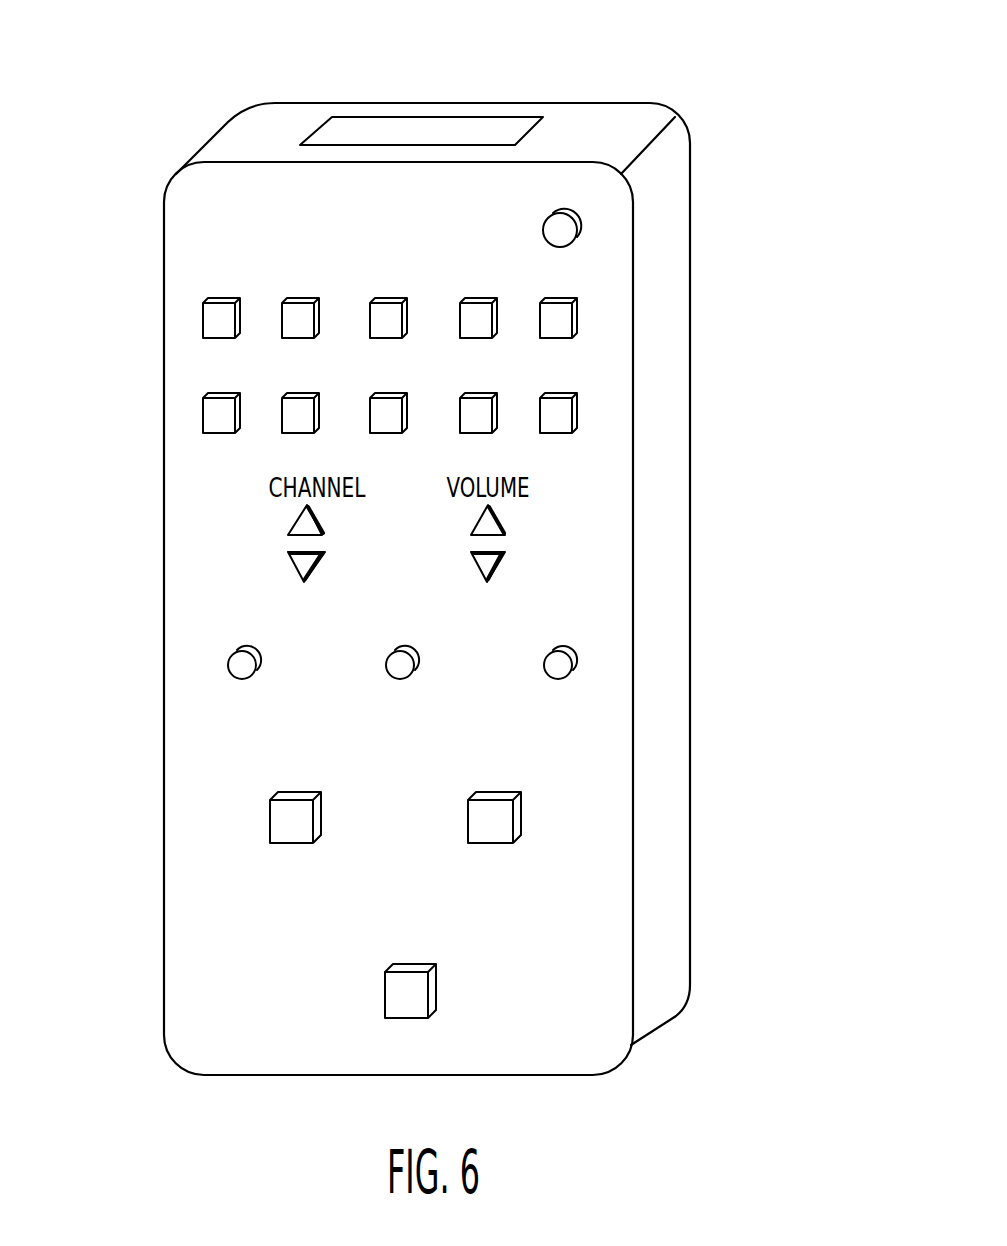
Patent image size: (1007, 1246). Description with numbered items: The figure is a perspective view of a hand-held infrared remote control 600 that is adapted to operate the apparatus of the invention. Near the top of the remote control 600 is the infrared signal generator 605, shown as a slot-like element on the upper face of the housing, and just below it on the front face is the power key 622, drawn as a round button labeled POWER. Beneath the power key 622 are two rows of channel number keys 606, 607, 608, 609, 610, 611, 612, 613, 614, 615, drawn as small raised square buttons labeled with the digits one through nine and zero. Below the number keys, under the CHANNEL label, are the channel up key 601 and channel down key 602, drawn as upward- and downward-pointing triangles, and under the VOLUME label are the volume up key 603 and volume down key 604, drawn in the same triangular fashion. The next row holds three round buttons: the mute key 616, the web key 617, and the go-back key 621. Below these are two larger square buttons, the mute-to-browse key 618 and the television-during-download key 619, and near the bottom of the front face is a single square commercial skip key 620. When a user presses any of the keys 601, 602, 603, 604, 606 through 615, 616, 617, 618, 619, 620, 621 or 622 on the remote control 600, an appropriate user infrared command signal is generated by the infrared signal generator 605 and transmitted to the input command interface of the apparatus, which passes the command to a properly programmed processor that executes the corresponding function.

The infrared remote control 600 is at (742, 87).
The infrared signal generator 605 is at (372, 130).
The power key 622 is at (572, 228).
The channel number key 606 is at (218, 321).
The channel number key 607 is at (296, 318).
The channel number key 608 is at (385, 320).
The channel number key 609 is at (483, 317).
The channel number key 610 is at (557, 320).
The channel number key 611 is at (222, 415).
The channel number key 612 is at (290, 420).
The channel number key 613 is at (390, 413).
The channel number key 614 is at (480, 417).
The channel number key 615 is at (557, 415).
The channel up key 601 is at (305, 528).
The channel down key 602 is at (302, 565).
The volume up key 603 is at (487, 524).
The volume down key 604 is at (488, 566).
The mute key 616 is at (238, 670).
The web key 617 is at (407, 670).
The go-back key 621 is at (568, 668).
The mute-to-browse key 618 is at (287, 820).
The television-during-download key 619 is at (497, 823).
The commercial skip key 620 is at (413, 997).